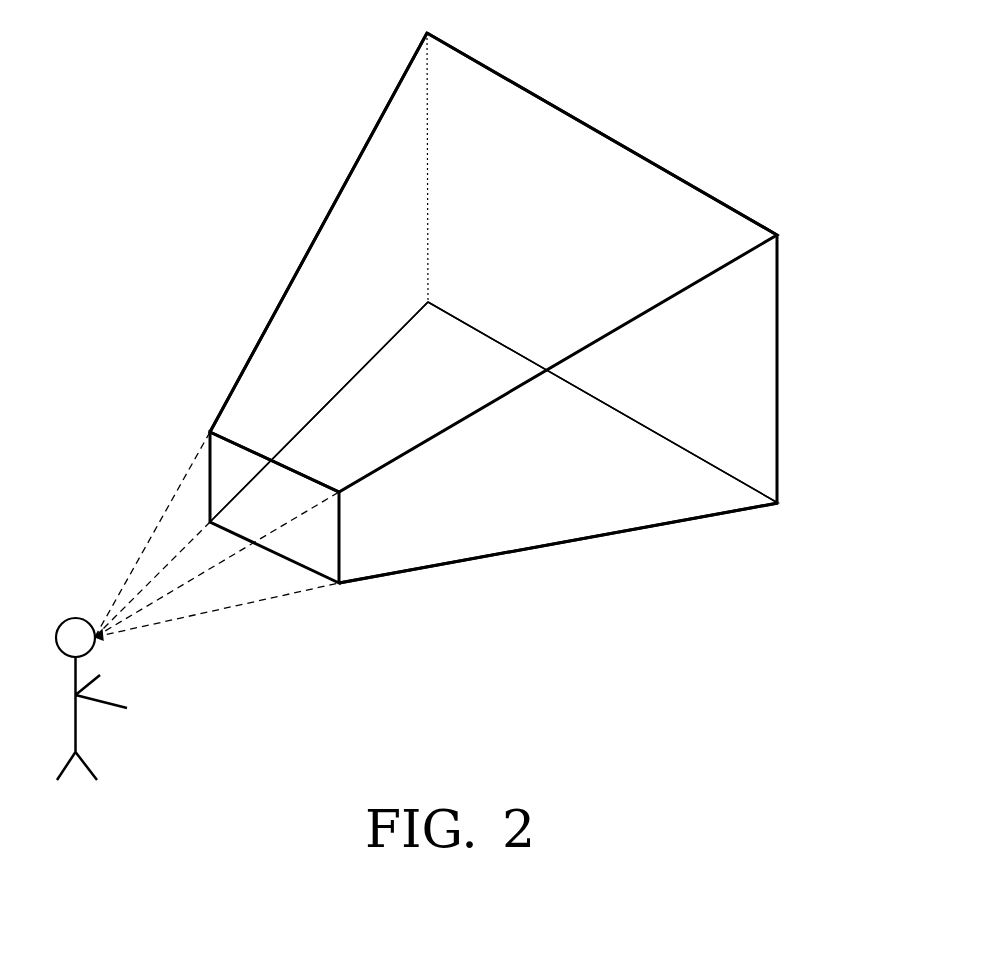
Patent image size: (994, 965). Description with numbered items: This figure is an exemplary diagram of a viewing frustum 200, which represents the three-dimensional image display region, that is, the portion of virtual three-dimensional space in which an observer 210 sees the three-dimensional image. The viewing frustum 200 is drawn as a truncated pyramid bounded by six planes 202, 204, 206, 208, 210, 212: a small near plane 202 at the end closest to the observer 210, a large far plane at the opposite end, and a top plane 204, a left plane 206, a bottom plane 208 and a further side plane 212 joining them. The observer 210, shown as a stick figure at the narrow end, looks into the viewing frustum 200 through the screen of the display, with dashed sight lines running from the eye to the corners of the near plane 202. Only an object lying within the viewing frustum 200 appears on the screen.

The viewing frustum 200 is at (340, 182).
The plane 202 is at (315, 552).
The plane 204 is at (592, 158).
The plane 206 is at (325, 293).
The plane 208 is at (657, 500).
The observer 210 is at (78, 632).
The plane 212 is at (492, 520).